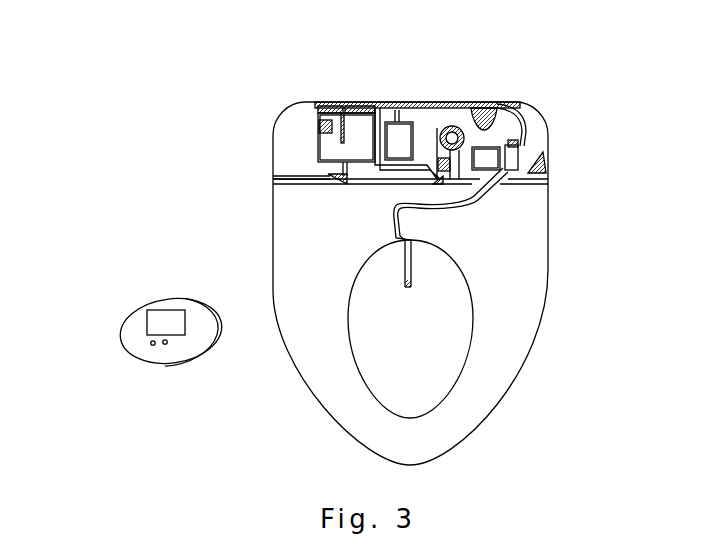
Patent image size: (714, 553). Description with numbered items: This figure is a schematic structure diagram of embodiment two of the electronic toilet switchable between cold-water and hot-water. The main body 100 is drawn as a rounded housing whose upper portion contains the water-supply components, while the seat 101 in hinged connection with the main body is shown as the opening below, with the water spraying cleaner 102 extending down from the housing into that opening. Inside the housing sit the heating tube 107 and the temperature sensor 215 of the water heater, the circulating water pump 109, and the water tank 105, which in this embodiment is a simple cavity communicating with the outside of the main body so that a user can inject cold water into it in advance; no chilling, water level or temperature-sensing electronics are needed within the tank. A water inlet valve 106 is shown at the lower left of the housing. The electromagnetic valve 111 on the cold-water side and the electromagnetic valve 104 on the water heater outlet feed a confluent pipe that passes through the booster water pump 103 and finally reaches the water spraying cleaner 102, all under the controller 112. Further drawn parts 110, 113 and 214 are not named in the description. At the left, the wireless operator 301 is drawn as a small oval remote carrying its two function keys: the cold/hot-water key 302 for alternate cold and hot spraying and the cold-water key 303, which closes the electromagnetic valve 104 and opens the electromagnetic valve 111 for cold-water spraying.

The main body 100 is at (450, 283).
The seat 101 is at (484, 329).
The water spraying cleaner 102 is at (511, 227).
The booster water pump 103 is at (550, 123).
The electromagnetic valve 104 is at (549, 72).
The water tank 105 is at (401, 89).
The water inlet valve 106 is at (233, 216).
The heating tube 107 is at (323, 66).
The circulating water pump 109 is at (360, 66).
The heater module 110 is at (246, 137).
The electromagnetic valve 111 is at (566, 107).
The controller 112 is at (578, 140).
The pump 113 is at (485, 99).
The mounting plate 214 is at (225, 191).
The temperature sensor 215 is at (226, 97).
The wireless operator 301 is at (113, 302).
The cold/hot-water key 302 is at (98, 325).
The cold-water key 303 is at (104, 351).